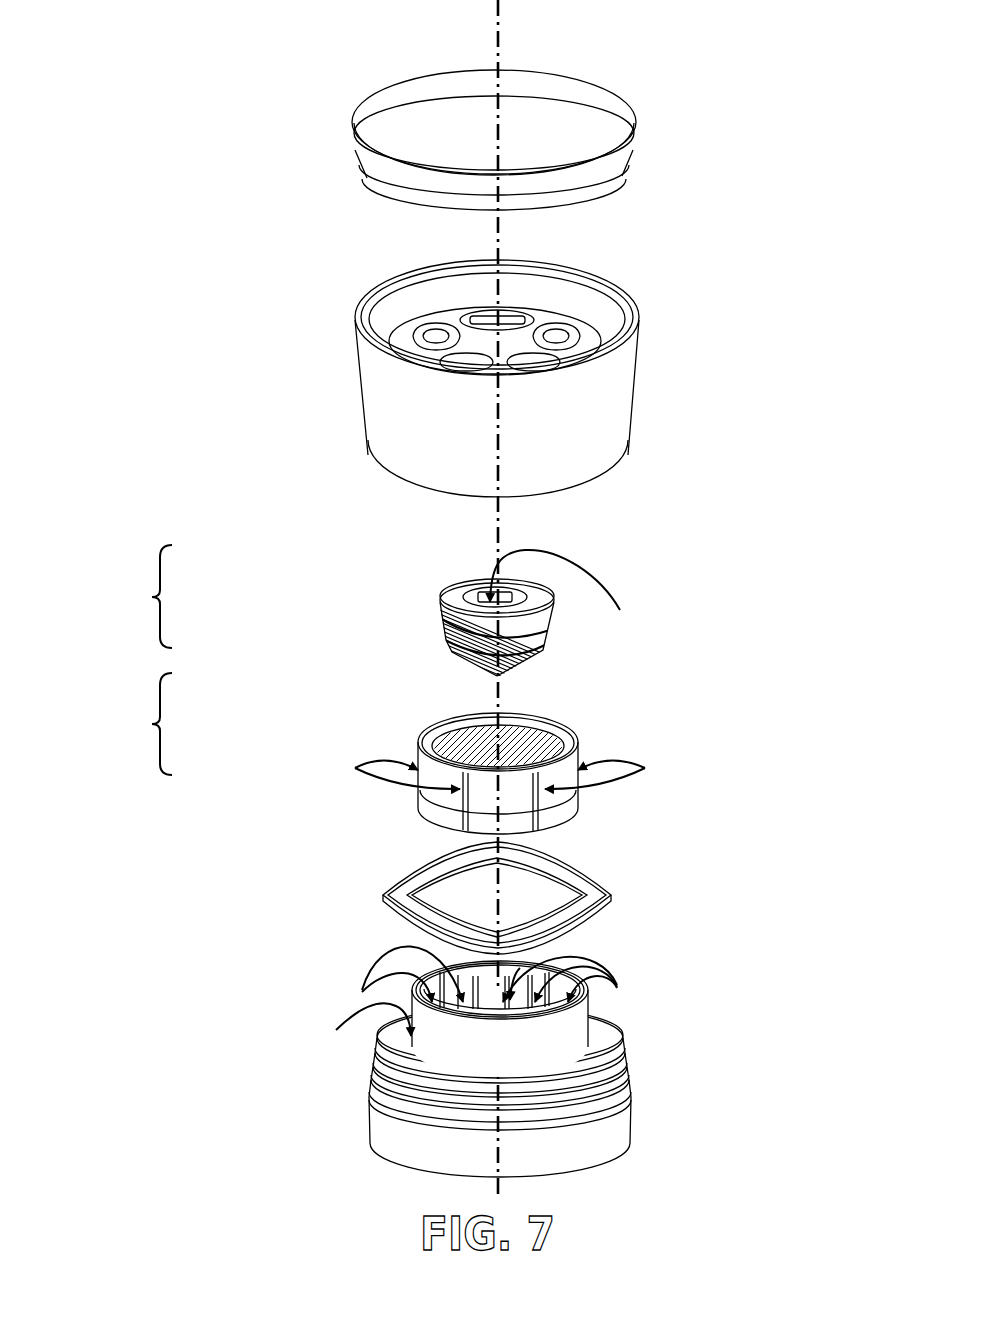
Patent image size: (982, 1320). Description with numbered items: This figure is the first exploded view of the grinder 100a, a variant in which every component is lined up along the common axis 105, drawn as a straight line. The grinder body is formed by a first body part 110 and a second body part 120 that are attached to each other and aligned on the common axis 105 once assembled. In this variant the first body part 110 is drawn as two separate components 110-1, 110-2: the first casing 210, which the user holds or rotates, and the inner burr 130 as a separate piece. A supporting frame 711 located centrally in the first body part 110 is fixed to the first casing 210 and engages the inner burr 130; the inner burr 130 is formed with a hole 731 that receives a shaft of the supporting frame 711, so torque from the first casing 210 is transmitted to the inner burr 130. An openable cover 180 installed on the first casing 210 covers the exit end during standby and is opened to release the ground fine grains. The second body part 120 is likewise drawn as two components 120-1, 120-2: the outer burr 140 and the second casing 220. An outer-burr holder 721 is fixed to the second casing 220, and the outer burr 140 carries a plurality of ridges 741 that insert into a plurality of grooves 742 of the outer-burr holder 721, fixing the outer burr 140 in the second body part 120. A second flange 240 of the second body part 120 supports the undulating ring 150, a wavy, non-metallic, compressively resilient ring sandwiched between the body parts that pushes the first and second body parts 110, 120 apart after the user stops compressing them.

The common axis 105 is at (444, 600).
The openable cover 180 is at (425, 140).
The first component of upper assembly (container body) 110-1 is at (455, 355).
The first casing 210 is at (442, 378).
The supporting frame 711 is at (533, 294).
The first body part 110 is at (158, 596).
The second body part 120 is at (158, 724).
The second component of upper assembly (burr) 110-2 is at (485, 637).
The inner burr 130 is at (455, 652).
The hole 731 is at (570, 597).
The first component of lower assembly (ring) 120-1 is at (511, 781).
The outer burr 140 is at (479, 783).
The ridges 741 is at (500, 773).
The undulating ring 150 is at (528, 892).
The second component of lower assembly (base) 120-2 is at (509, 1065).
The second casing 220 is at (432, 1096).
The outer-burr holder 721 is at (598, 1019).
The second flange 240 is at (357, 1033).
The grooves 742 is at (490, 975).
The grinder 100a is at (163, 1007).